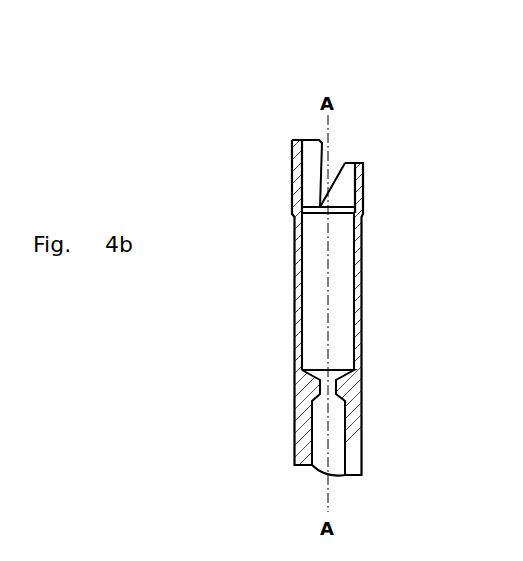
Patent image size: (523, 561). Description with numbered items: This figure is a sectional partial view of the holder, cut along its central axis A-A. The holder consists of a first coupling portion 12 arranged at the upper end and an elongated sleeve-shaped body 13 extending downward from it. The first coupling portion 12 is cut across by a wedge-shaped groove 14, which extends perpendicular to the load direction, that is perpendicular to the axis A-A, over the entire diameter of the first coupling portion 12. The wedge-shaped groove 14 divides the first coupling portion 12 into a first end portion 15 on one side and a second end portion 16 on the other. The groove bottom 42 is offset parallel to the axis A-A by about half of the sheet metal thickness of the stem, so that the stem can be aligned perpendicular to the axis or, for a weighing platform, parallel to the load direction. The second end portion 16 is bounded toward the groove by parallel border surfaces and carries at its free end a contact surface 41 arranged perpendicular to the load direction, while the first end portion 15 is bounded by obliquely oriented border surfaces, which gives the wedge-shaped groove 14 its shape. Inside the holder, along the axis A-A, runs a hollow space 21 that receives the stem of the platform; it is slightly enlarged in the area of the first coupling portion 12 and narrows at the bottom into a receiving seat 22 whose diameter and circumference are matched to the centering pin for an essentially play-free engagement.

The first coupling portion 12 is at (380, 197).
The elongated sleeve-shaped body 13 is at (354, 292).
The wedge-shaped groove 14 is at (333, 158).
The first end portion 15 is at (358, 177).
The second end portion 16 is at (298, 173).
The hollow space 21 is at (335, 328).
The receiving seat 22 is at (325, 388).
The contact surface 41 is at (302, 140).
The groove bottom 42 is at (318, 207).